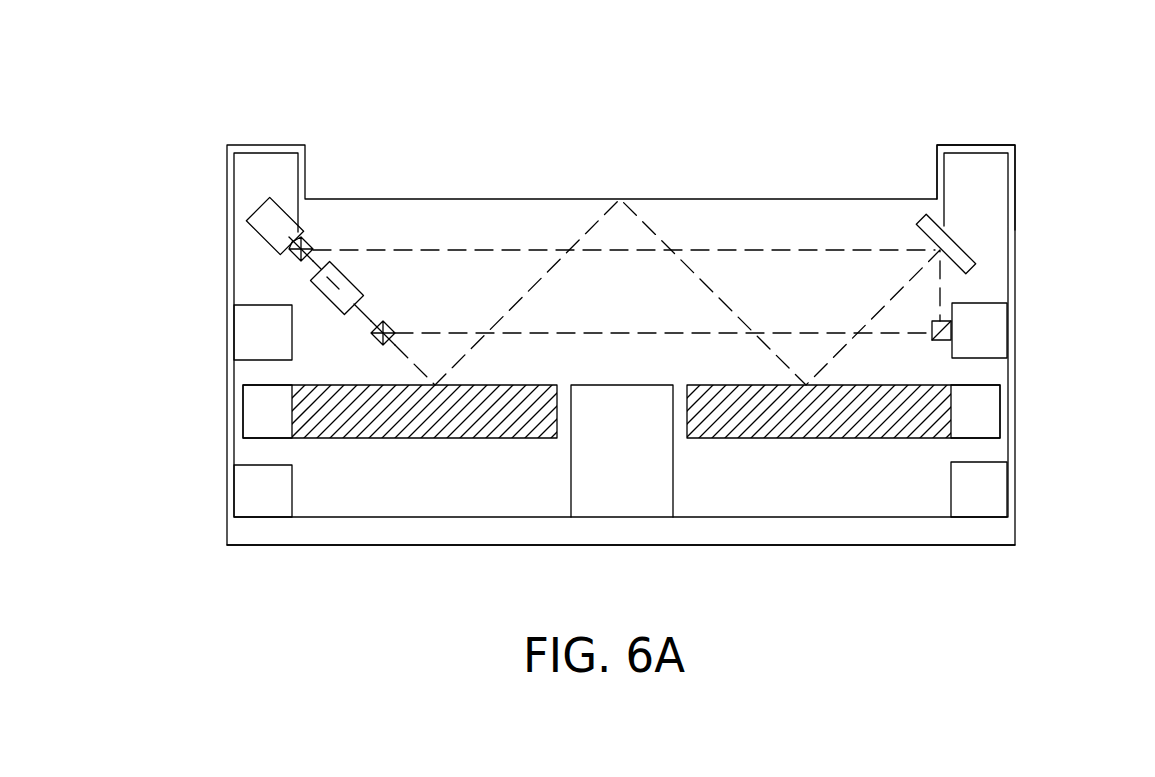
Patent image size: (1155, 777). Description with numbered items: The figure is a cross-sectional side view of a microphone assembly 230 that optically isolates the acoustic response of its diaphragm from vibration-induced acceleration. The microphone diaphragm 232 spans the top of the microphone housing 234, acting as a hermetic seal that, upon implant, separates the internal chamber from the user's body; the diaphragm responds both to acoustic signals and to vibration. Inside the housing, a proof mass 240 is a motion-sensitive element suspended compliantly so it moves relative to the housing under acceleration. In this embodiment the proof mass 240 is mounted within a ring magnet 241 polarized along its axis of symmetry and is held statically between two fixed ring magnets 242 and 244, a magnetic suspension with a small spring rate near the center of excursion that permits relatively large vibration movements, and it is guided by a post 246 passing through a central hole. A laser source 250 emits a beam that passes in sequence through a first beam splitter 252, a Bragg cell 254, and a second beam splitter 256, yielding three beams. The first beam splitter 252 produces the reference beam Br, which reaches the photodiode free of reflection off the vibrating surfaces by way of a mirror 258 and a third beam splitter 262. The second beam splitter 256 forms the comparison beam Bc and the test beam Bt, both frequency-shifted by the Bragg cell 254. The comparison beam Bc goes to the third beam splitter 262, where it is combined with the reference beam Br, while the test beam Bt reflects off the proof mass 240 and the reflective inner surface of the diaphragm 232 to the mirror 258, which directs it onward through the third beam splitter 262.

The microphone assembly 230 is at (183, 393).
The microphone diaphragm 232 is at (745, 199).
The microphone housing 234 is at (975, 145).
The proof mass 240 is at (398, 440).
The ring magnet 241 is at (990, 410).
The fixed ring magnet 242 is at (998, 327).
The fixed ring magnet 244 is at (995, 488).
The post 246 is at (655, 487).
The laser source 250 is at (252, 224).
The first beam splitter 252 is at (313, 245).
The Bragg cell 254 is at (365, 285).
The second beam splitter 256 is at (375, 338).
The mirror 258 is at (958, 248).
The third beam splitter 262 is at (932, 337).
The reference beam Br is at (480, 251).
The test beam Bt is at (553, 268).
The comparison beam Bc is at (525, 334).